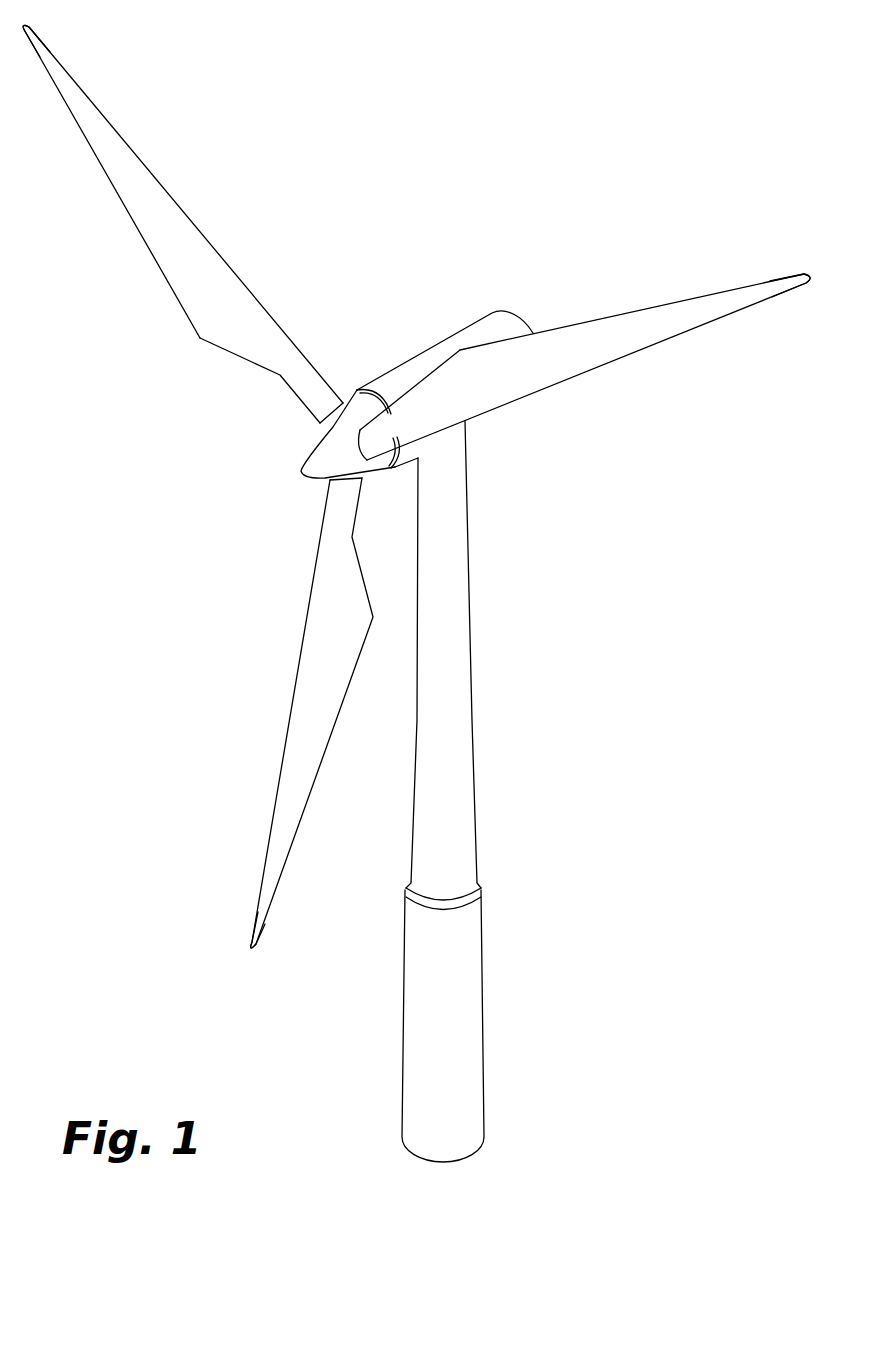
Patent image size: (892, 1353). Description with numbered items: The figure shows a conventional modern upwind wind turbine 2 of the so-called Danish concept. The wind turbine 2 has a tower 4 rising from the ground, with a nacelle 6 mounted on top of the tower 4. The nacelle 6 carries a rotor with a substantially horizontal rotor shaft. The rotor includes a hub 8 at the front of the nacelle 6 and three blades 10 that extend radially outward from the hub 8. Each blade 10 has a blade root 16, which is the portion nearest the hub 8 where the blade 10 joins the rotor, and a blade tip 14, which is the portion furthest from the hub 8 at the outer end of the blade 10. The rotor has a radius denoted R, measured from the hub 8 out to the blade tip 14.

The wind turbine 2 is at (568, 736).
The tower 4 is at (460, 661).
The nacelle 6 is at (410, 373).
The hub 8 is at (318, 455).
The blade 10 is at (213, 312).
The blade tip 14 is at (70, 78).
The blade root 16 is at (320, 422).